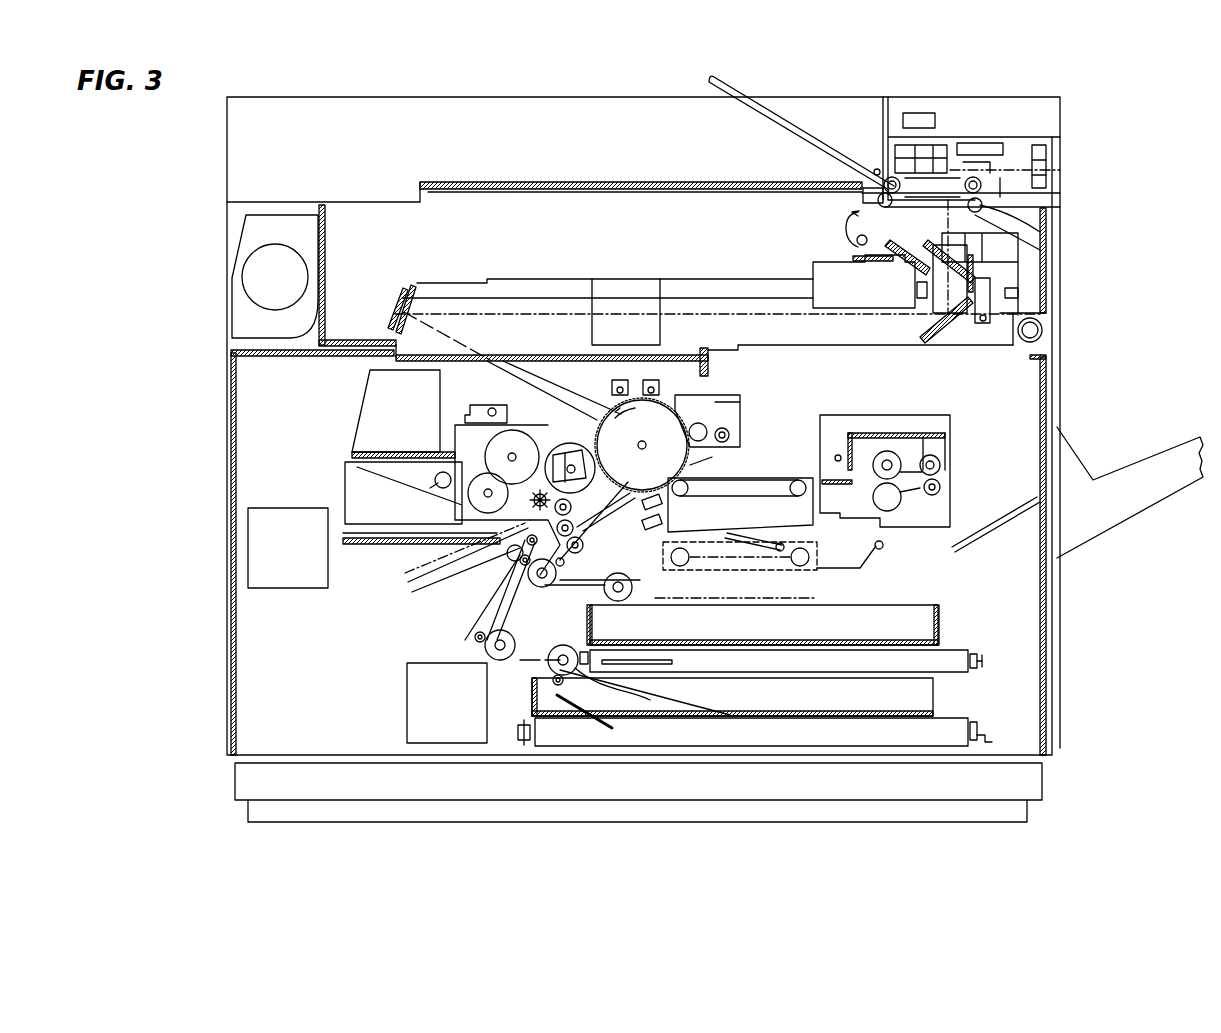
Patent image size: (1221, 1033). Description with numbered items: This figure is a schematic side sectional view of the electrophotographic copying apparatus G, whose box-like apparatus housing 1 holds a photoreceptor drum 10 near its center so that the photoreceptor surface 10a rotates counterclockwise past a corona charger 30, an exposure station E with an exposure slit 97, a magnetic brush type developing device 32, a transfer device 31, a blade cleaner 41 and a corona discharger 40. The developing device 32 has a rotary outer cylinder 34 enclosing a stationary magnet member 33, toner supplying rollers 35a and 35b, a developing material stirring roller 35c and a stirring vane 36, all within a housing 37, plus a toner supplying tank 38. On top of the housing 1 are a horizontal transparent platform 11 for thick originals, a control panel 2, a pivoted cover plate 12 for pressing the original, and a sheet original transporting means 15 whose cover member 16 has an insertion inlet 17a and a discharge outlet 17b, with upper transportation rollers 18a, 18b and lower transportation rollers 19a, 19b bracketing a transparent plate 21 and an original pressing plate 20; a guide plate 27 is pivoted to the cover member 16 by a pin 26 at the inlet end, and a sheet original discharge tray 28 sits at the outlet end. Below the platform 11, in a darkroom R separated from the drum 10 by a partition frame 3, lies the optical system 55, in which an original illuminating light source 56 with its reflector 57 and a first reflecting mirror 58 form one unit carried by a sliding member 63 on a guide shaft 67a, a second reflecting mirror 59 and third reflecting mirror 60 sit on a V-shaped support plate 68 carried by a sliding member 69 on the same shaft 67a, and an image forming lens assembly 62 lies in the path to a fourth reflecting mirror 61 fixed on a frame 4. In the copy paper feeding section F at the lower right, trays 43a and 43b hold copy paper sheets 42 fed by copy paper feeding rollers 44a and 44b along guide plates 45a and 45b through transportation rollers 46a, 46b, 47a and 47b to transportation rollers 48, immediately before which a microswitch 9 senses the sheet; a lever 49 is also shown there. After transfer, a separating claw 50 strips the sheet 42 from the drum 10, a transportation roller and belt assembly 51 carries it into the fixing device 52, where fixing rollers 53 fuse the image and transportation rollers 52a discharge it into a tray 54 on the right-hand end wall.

The apparatus housing 1 is at (212, 430).
The control panel 2 is at (1025, 137).
The partition frame 3 is at (885, 450).
The frame 4 is at (412, 285).
The microswitch 9 is at (475, 545).
The photoreceptor drum 10 is at (665, 398).
The photoreceptor surface 10a is at (650, 469).
The transparent platform 11 is at (535, 192).
The cover plate 12 is at (588, 181).
The sheet original transporting means 15 is at (945, 175).
The cover member 16 is at (922, 145).
The insertion inlet 17a is at (875, 168).
The discharge outlet 17b is at (1000, 192).
The upper transportation roller 18a is at (892, 177).
The upper transportation roller 18b is at (978, 177).
The lower transportation roller 19a is at (860, 183).
The lower transportation roller 19b is at (985, 205).
The original pressing plate 20 is at (930, 165).
The transparent plate 21 is at (1050, 238).
The pin 26 is at (880, 195).
The guide plate 27 is at (790, 128).
The sheet original discharge tray 28 is at (1042, 188).
The corona charger 30 is at (612, 372).
The transfer device 31 is at (662, 505).
The developing device 32 is at (445, 415).
The stationary magnet member 33 is at (530, 378).
The rotary outer cylinder 34 is at (520, 375).
The toner supplying roller 35a is at (487, 356).
The toner supplying roller 35b is at (440, 525).
The developing material stirring roller 35c is at (585, 512).
The stirring vane 36 is at (480, 488).
The housing 37 is at (470, 420).
The toner supplying tank 38 is at (365, 412).
The corona discharger 40 is at (626, 312).
The blade cleaner 41 is at (730, 412).
The copy paper sheet 42 is at (840, 633).
The tray 43a is at (940, 615).
The tray 43b is at (940, 690).
The copy paper feeding roller 44a is at (660, 572).
The copy paper feeding roller 44b is at (605, 690).
The guide plate 45a is at (545, 590).
The guide plate 45b is at (500, 660).
The transportation roller 46a is at (475, 632).
The transportation roller 46b is at (490, 665).
The transportation roller 47a is at (495, 590).
The transportation roller 47b is at (470, 650).
The transportation rollers 48 is at (564, 575).
The lever 49 is at (700, 530).
The separating claw 50 is at (788, 497).
The transportation roller and belt assembly 51 is at (712, 457).
The fixing device 52 is at (912, 445).
The transportation rollers 52a is at (940, 462).
The fixing rollers 53 is at (888, 450).
The tray 54 is at (1118, 505).
The optical system 55 is at (766, 275).
The original illuminating light source 56 is at (848, 225).
The reflector 57 is at (850, 245).
The first reflecting mirror 58 is at (838, 338).
The second reflecting mirror 59 is at (1000, 292).
The third reflecting mirror 60 is at (955, 335).
The fourth reflecting mirror 61 is at (395, 300).
The image forming lens assembly 62 is at (605, 272).
The sliding member 63 is at (830, 295).
The guide shaft 67a is at (698, 290).
The support plate 68 is at (1013, 340).
The sliding member 69 is at (1010, 278).
The exposure slit 97 is at (585, 355).
The exposure station E is at (622, 459).
The copy paper feeding section F is at (974, 578).
The electrophotographic copying apparatus G is at (1112, 131).
The darkroom R is at (745, 347).